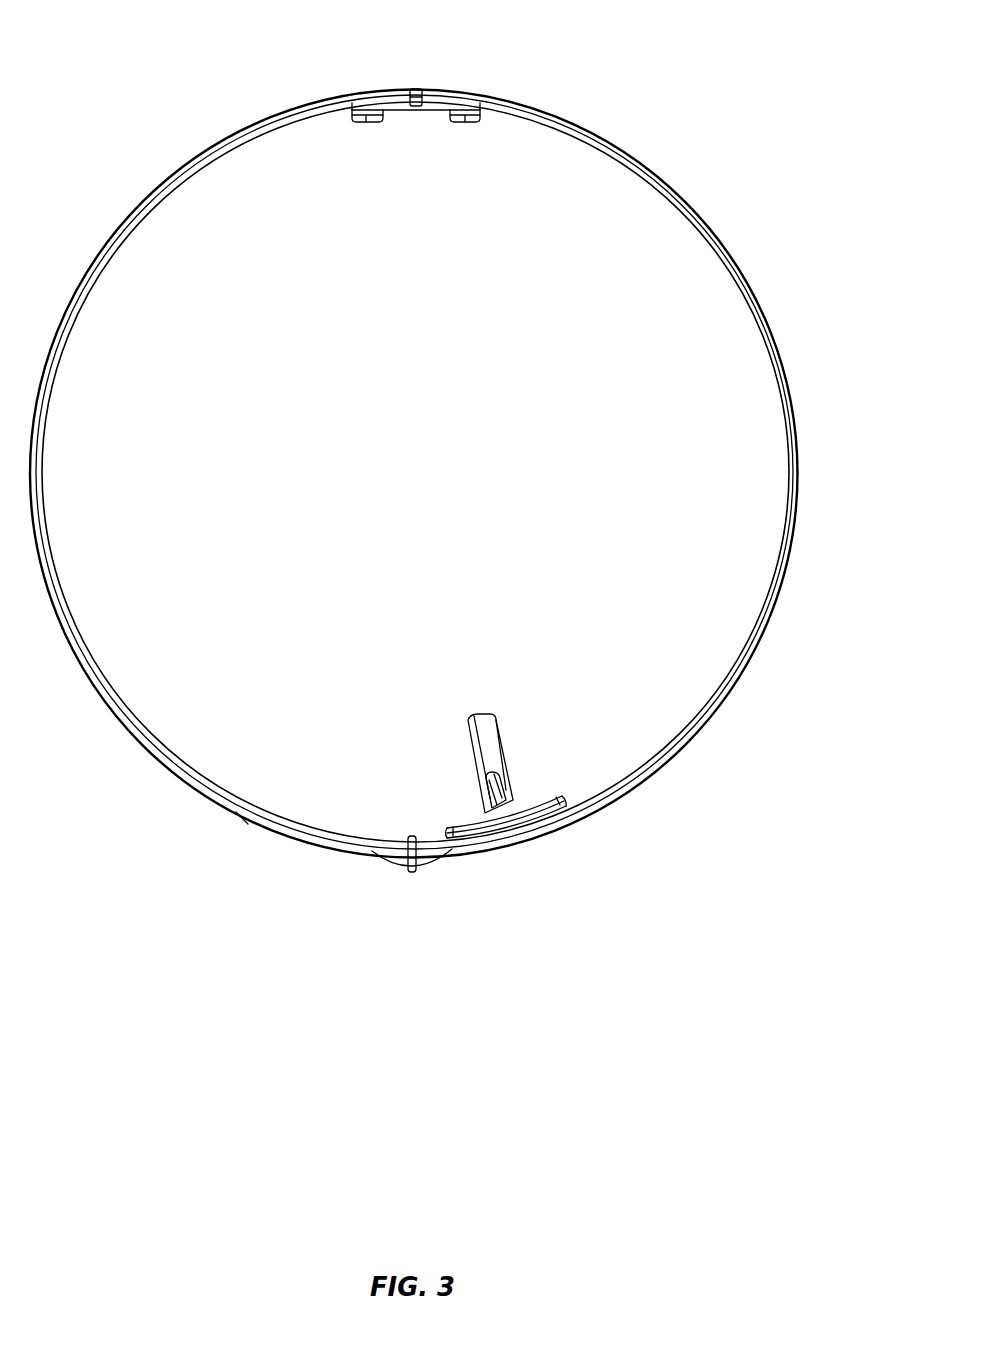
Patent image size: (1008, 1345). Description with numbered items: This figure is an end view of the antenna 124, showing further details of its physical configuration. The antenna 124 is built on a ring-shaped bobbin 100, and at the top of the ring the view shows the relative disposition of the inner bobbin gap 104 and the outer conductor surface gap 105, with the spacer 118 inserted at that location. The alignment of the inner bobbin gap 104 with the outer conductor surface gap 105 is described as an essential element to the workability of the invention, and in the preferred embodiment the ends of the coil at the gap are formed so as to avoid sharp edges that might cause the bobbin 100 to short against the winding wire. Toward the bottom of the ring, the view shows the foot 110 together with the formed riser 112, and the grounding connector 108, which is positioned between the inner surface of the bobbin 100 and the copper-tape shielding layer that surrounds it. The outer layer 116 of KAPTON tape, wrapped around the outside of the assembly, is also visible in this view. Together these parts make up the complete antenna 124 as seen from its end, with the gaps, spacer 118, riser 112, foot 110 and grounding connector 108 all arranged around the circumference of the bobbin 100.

The bobbin 100 is at (125, 706).
The inner bobbin gap 104 is at (416, 89).
The outer conductor surface gap 105 is at (410, 89).
The grounding connector 108 is at (410, 836).
The foot 110 is at (537, 805).
The formed riser 112 is at (497, 727).
The outer layer of KAPTON tape 116 is at (248, 822).
The spacer 118 is at (418, 110).
The antenna 124 is at (794, 102).